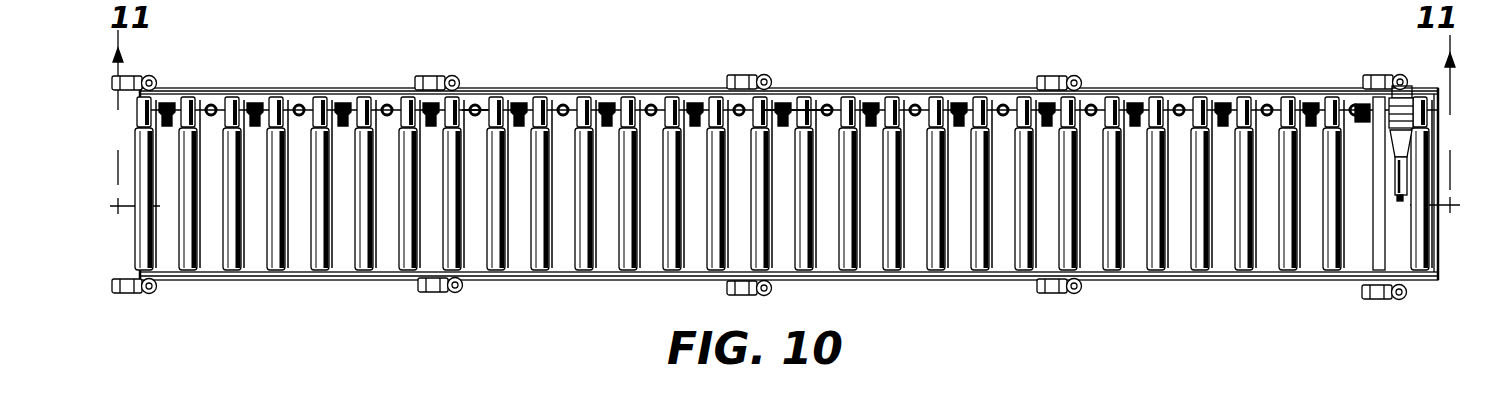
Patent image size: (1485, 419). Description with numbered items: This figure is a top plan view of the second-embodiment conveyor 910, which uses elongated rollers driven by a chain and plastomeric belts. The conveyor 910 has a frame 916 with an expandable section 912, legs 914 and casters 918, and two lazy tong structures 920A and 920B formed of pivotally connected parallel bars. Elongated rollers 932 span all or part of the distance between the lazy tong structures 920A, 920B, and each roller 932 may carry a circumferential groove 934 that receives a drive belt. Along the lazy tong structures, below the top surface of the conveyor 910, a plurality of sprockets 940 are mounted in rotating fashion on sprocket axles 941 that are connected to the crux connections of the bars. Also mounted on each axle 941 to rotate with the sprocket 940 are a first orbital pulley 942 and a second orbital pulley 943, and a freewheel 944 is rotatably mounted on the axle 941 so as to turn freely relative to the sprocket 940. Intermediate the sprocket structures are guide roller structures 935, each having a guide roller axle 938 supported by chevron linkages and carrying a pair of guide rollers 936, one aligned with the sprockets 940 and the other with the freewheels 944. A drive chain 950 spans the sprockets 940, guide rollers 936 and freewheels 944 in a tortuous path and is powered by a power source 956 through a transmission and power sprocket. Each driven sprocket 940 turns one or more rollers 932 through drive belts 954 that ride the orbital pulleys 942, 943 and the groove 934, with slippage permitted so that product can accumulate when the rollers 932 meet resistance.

The conveyor 910 is at (337, 30).
The expandable section 912 is at (650, 92).
The legs 914 is at (462, 82).
The frame 916 is at (1425, 88).
The casters 918 is at (418, 80).
The lazy tong structure 920A is at (728, 52).
The lazy tong structure 920B is at (645, 283).
The elongated rollers 932 is at (327, 97).
The circumferential groove 934 is at (235, 97).
The guide roller structures 935 is at (472, 120).
The guide rollers 936 is at (568, 105).
The guide roller axle 938 is at (572, 250).
The sprockets 940 is at (790, 108).
The sprocket axle 941 is at (347, 253).
The first orbital pulley 942 is at (940, 100).
The second orbital pulley 943 is at (983, 100).
The freewheel 944 is at (778, 100).
The drive chain 950 is at (1395, 175).
The drive belts 954 is at (1247, 100).
The power source 956 is at (1358, 100).